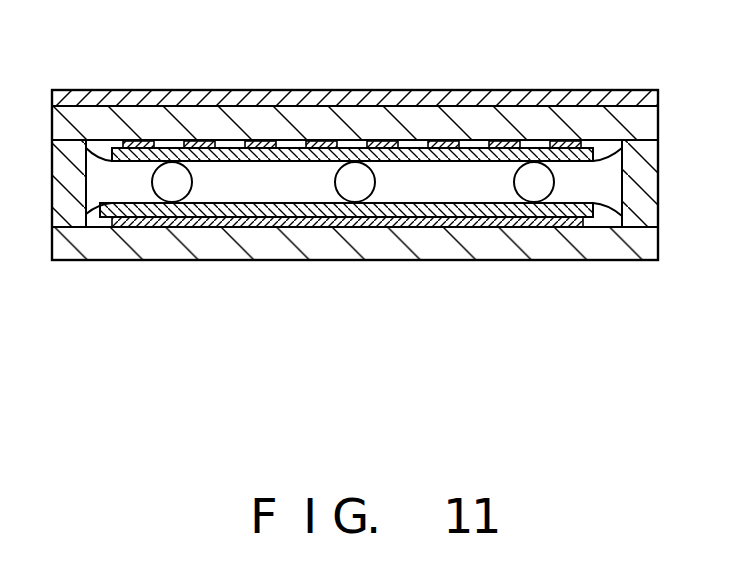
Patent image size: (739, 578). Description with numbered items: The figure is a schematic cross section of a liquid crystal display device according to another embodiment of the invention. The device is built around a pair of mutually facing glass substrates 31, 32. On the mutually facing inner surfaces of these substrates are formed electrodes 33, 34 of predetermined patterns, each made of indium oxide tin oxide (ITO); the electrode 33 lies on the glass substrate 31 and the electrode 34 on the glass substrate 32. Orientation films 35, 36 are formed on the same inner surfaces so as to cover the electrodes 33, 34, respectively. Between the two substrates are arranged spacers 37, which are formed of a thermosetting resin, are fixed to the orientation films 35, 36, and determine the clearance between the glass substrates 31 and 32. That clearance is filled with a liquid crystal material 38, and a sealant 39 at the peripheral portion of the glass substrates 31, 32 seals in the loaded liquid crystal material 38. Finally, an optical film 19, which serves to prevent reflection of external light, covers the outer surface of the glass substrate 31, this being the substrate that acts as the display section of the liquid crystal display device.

The optical film 19 is at (618, 98).
The glass substrate 31 is at (148, 115).
The glass substrate 32 is at (128, 245).
The electrode 33 is at (330, 142).
The electrode 34 is at (255, 226).
The orientation film 35 is at (535, 150).
The orientation film 36 is at (460, 218).
The spacer 37 is at (151, 182).
The liquid crystal material 38 is at (600, 195).
The sealant 39 is at (650, 200).